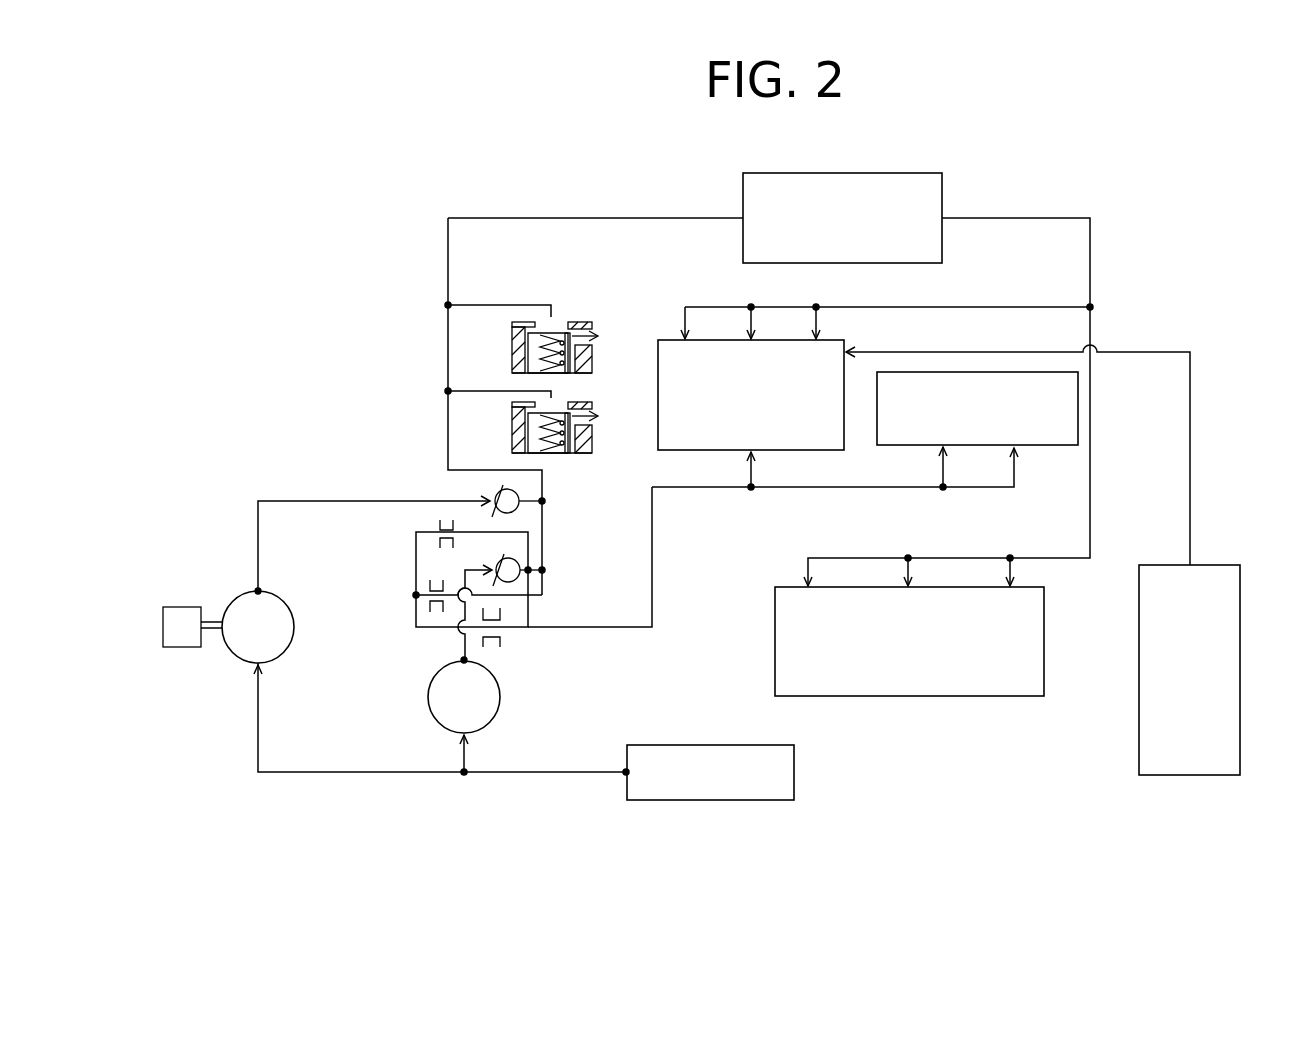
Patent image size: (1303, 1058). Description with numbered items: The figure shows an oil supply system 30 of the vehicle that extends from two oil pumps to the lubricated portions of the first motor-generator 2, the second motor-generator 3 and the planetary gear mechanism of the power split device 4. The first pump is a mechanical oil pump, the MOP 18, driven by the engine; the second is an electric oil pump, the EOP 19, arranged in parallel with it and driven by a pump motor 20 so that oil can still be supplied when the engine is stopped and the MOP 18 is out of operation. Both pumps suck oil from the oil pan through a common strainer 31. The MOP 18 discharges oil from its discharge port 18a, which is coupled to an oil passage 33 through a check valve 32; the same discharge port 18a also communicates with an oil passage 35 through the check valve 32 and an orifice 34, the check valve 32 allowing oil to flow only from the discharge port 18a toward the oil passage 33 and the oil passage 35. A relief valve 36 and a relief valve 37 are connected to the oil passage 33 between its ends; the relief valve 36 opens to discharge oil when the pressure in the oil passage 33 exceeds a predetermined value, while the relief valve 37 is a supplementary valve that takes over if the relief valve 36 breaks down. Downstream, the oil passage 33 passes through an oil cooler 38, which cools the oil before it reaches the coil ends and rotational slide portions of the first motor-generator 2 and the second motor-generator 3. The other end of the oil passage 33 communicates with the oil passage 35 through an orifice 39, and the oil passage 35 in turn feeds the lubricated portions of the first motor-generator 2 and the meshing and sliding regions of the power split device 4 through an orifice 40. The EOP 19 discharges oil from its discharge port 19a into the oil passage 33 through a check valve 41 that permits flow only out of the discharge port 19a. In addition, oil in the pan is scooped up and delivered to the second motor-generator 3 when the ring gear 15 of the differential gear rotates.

The oil supply system 30 is at (345, 251).
The oil passage 33 is at (610, 217).
The oil cooler 38 is at (893, 173).
The relief valve 37 is at (600, 318).
The relief valve 36 is at (603, 393).
The first motor-generator 2 is at (683, 452).
The power split device 4 is at (1051, 459).
The second motor-generator 3 is at (908, 697).
The ring gear 15 is at (1190, 776).
The strainer 31 is at (710, 801).
The second oil pump 19 is at (241, 598).
The pump motor 20 is at (180, 650).
The discharge port 19a is at (260, 548).
The first oil pump 18 is at (428, 697).
The discharge port 18a is at (462, 637).
The check valve 41 is at (493, 497).
The check valve 32 is at (524, 579).
The oil passage 35 is at (416, 563).
The orifice 34 is at (440, 527).
The orifice 39 is at (416, 602).
The orifice 40 is at (501, 640).